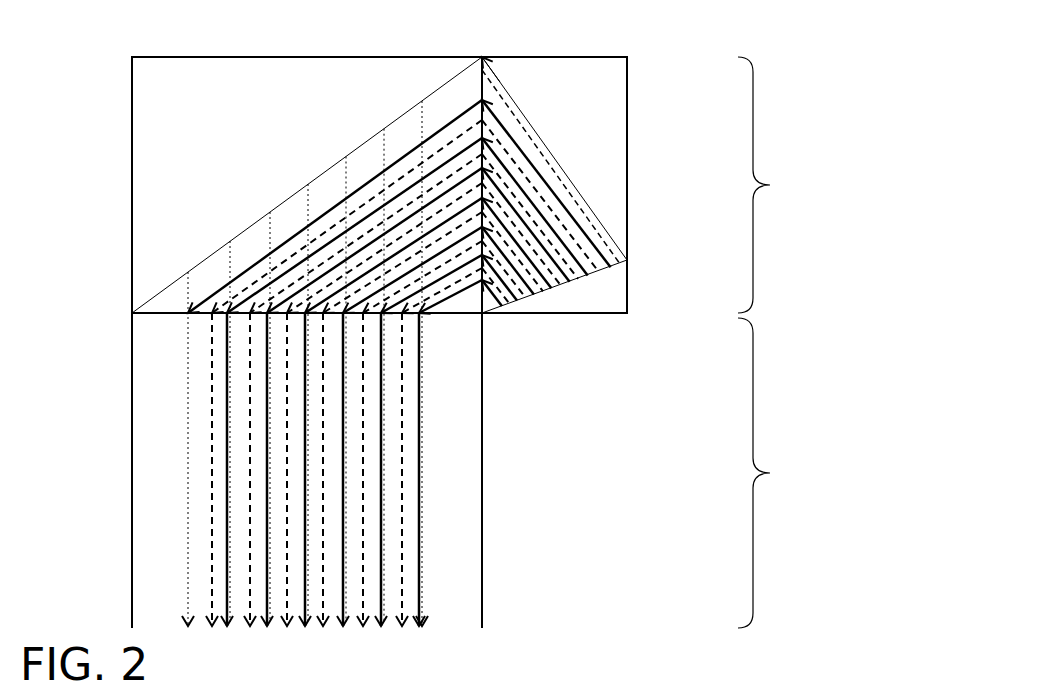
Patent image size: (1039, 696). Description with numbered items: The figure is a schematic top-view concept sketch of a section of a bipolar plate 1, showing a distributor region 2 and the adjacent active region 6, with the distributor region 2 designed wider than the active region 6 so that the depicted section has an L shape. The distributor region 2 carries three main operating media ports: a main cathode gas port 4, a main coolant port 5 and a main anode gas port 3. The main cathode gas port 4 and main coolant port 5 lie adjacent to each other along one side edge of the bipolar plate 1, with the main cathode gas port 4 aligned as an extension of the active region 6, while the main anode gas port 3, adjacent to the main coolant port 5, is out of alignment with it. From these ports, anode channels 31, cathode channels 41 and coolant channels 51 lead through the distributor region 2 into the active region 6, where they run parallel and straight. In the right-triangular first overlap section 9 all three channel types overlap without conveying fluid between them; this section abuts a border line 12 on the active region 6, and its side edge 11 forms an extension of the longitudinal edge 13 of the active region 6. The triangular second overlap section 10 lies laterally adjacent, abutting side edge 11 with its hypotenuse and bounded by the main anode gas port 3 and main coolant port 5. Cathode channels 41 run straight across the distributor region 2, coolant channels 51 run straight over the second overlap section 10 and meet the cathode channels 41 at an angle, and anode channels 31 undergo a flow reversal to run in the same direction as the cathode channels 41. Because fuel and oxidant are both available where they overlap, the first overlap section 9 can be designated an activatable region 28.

The bipolar plate 1 is at (848, 94).
The distributor region 2 is at (771, 185).
The main anode gas port 3 is at (597, 296).
The main cathode gas port 4 is at (244, 126).
The main coolant port 5 is at (554, 158).
The active region 6 is at (451, 536).
The first overlap section 9 is at (395, 118).
The second overlap section 10 is at (542, 155).
The side edge 11 is at (494, 67).
The border line 12 is at (146, 320).
The longitudinal edge 13 is at (488, 571).
The activatable region 28 is at (467, 305).
The anode channels 31 is at (583, 237).
The cathode channels 41 is at (268, 228).
The coolant channels 51 is at (573, 205).